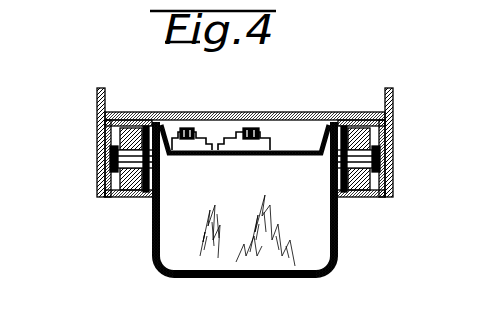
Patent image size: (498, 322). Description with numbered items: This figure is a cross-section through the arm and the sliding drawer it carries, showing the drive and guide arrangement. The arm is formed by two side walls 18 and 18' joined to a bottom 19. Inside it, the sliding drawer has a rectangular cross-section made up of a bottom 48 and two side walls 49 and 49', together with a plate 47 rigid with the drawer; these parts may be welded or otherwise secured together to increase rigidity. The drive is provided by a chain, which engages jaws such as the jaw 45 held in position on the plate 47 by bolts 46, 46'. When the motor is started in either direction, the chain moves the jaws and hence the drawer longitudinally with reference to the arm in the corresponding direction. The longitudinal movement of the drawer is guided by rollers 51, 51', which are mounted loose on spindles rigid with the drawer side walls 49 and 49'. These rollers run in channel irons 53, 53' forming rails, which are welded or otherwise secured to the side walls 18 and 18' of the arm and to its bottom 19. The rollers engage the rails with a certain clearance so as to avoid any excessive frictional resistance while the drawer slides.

The side wall 18 is at (416, 142).
The side wall 18' is at (66, 142).
The bottom 19 is at (307, 112).
The jaw 45 is at (202, 152).
The bolt 46 is at (197, 105).
The bolt 46' is at (249, 130).
The plate 47 is at (302, 153).
The bottom 48 is at (238, 277).
The side wall 49 is at (313, 198).
The side wall 49' is at (173, 198).
The roller 51 is at (358, 135).
The roller 51' is at (131, 134).
The channel iron 53 is at (372, 216).
The channel iron 53' is at (115, 215).